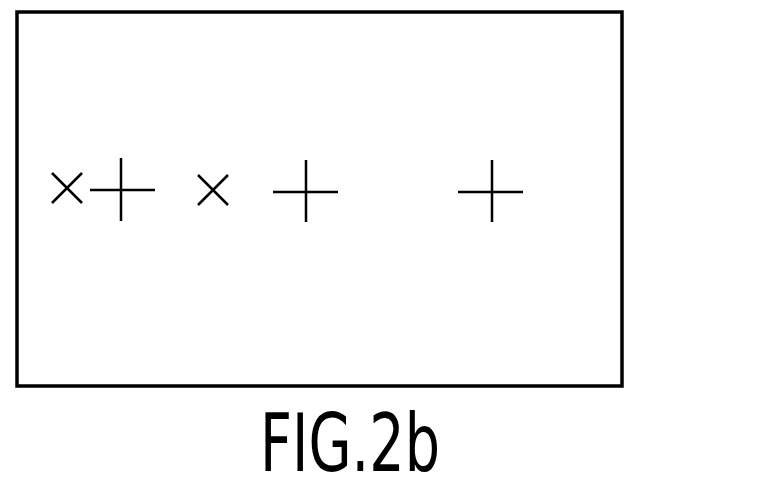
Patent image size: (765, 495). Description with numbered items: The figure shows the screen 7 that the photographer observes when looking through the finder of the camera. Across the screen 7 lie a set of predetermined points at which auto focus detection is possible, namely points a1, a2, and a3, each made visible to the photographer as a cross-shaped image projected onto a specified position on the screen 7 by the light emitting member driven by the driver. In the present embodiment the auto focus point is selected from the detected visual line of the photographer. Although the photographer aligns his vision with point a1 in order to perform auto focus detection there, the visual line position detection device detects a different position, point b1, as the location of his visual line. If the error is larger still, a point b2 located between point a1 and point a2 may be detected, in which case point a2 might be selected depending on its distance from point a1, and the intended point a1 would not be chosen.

The screen 7 is at (622, 95).
The point a1 is at (122, 219).
The point a2 is at (305, 220).
The point a3 is at (493, 220).
The point b1 is at (73, 210).
The point b2 is at (219, 211).